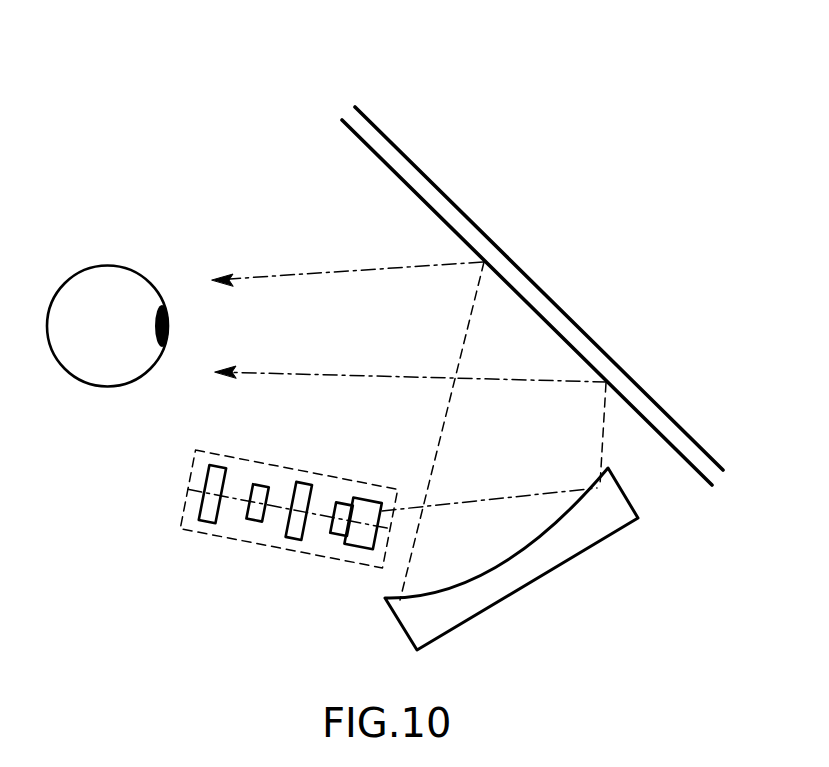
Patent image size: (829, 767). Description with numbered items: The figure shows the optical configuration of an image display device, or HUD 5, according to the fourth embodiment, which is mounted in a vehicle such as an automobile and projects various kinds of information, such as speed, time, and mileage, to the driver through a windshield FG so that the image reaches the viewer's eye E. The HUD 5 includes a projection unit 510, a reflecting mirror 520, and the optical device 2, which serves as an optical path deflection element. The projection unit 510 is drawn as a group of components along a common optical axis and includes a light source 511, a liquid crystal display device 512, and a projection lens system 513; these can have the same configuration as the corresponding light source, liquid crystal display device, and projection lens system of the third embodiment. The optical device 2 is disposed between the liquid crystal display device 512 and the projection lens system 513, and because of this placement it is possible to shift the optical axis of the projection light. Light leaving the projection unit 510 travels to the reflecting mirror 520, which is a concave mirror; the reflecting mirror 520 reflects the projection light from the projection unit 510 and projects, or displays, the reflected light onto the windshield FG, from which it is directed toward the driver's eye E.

The image display device (HUD) 5 is at (465, 114).
The windshield FG is at (504, 264).
The eye E is at (101, 283).
The optical device 2 is at (302, 483).
The projection unit 510 is at (189, 481).
The light source 511 is at (206, 523).
The liquid crystal display device 512 is at (252, 522).
The projection lens system 513 is at (359, 550).
The reflecting mirror 520 is at (506, 585).